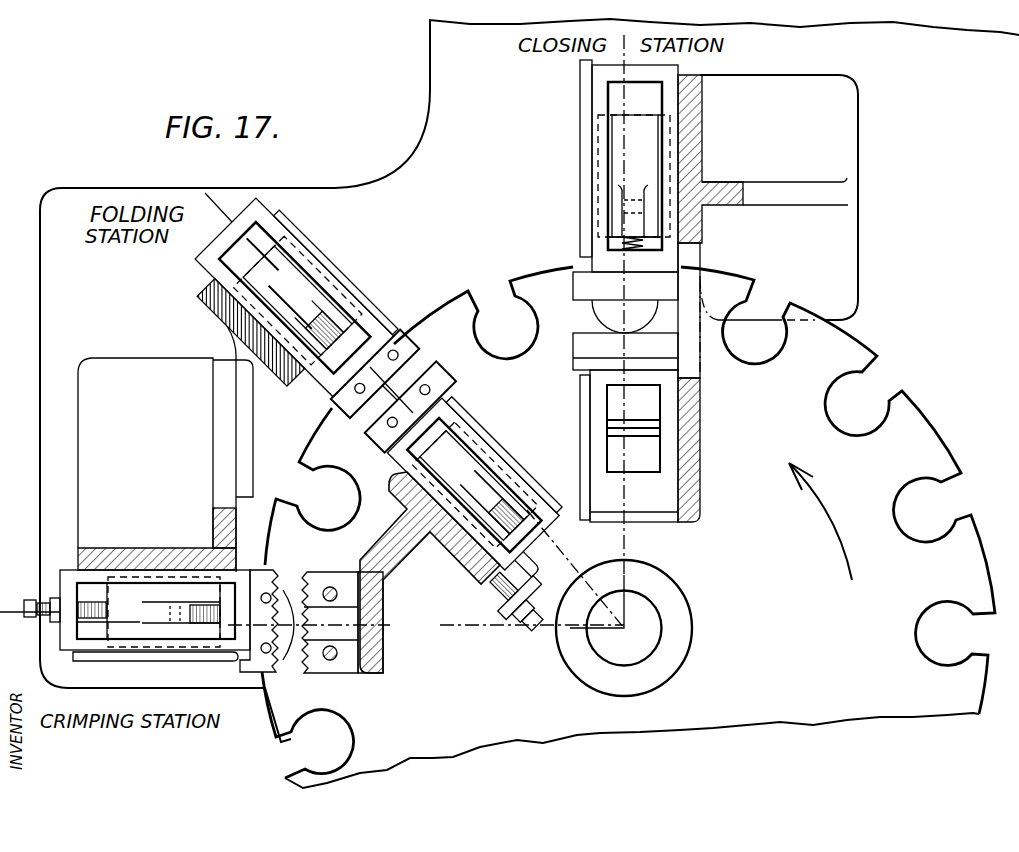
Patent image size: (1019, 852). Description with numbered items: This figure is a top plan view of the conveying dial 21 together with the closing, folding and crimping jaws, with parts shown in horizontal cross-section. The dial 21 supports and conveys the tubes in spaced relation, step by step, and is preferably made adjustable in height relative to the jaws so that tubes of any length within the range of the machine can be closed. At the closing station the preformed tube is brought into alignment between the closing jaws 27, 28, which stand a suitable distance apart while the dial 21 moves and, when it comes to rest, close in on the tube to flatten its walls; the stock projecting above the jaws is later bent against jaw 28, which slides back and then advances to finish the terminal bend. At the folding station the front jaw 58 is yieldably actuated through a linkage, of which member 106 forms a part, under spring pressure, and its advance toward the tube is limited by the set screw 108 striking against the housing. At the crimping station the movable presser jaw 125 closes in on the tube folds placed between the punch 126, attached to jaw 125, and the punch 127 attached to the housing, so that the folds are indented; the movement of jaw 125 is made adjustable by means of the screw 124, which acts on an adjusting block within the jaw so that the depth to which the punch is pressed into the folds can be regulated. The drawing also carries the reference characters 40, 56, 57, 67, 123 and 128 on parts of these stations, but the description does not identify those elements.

The dial 21 is at (937, 444).
The closing plunger 40 is at (620, 145).
The closing jaw 27 is at (598, 250).
The closing jaw 28 is at (598, 368).
The roller 56 is at (647, 427).
The folding plunger 67 is at (317, 303).
The guide plate 57 is at (381, 333).
The front jaw 58 is at (453, 400).
The linkage member 106 is at (473, 460).
The set screw 108 is at (527, 630).
The crimping plunger 123 is at (122, 593).
The screw 124 is at (26, 601).
The presser jaw 125 is at (100, 645).
The punch 126 is at (263, 662).
The punch 127 is at (337, 668).
The jaw support 128 is at (363, 622).